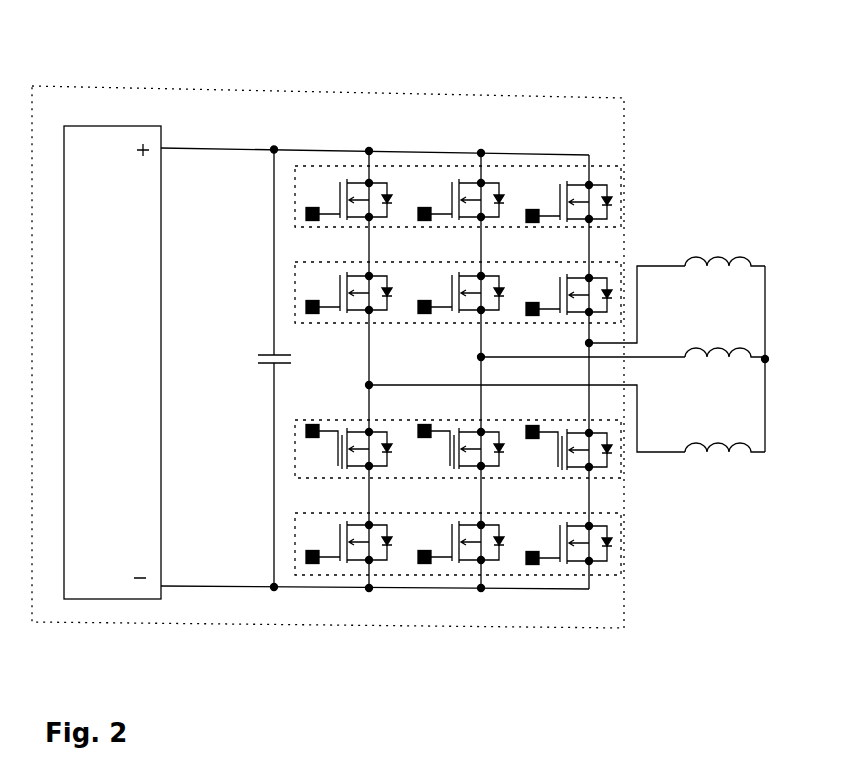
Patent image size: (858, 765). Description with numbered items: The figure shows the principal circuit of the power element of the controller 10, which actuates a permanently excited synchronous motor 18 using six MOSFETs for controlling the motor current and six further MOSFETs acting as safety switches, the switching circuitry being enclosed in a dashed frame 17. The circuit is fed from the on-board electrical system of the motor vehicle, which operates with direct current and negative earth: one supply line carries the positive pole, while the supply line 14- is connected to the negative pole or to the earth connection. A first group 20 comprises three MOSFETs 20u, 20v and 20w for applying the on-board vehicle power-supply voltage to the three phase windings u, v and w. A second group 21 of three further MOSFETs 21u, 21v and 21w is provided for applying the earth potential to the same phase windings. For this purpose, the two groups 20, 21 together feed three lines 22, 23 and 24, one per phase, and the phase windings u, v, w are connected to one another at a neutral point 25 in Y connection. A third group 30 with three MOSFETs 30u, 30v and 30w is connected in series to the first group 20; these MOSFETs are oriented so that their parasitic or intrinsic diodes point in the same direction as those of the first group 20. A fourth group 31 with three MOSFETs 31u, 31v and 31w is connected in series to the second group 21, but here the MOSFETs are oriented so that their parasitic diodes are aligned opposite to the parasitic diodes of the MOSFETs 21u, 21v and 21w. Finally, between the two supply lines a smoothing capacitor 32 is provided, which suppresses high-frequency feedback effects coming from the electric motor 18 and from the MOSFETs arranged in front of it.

The controller 10 is at (83, 558).
The supply line 14- is at (182, 587).
The inverter / power electronics unit 17 is at (442, 628).
The electric motor (stator windings) 18 is at (761, 399).
The first group 20 is at (403, 165).
The MOSFET 20u is at (600, 185).
The MOSFET 20v is at (487, 175).
The MOSFET 20w is at (377, 173).
The second group 21 is at (543, 577).
The MOSFET 21u is at (600, 563).
The MOSFET 21v is at (487, 560).
The MOSFET 21w is at (355, 560).
The line 22 is at (638, 342).
The line 23 is at (643, 356).
The line 24 is at (633, 384).
The neutral point 25 is at (767, 361).
The third group 30 is at (387, 263).
The MOSFET 30u is at (600, 278).
The MOSFET 30v is at (493, 265).
The MOSFET 30w is at (352, 265).
The fourth group 31 is at (407, 480).
The MOSFET 31u is at (600, 467).
The MOSFET 31v is at (483, 468).
The MOSFET 31w is at (338, 437).
The smoothing capacitor 32 is at (274, 300).
The phase winding u is at (750, 265).
The phase winding v is at (745, 355).
The phase winding w is at (757, 449).